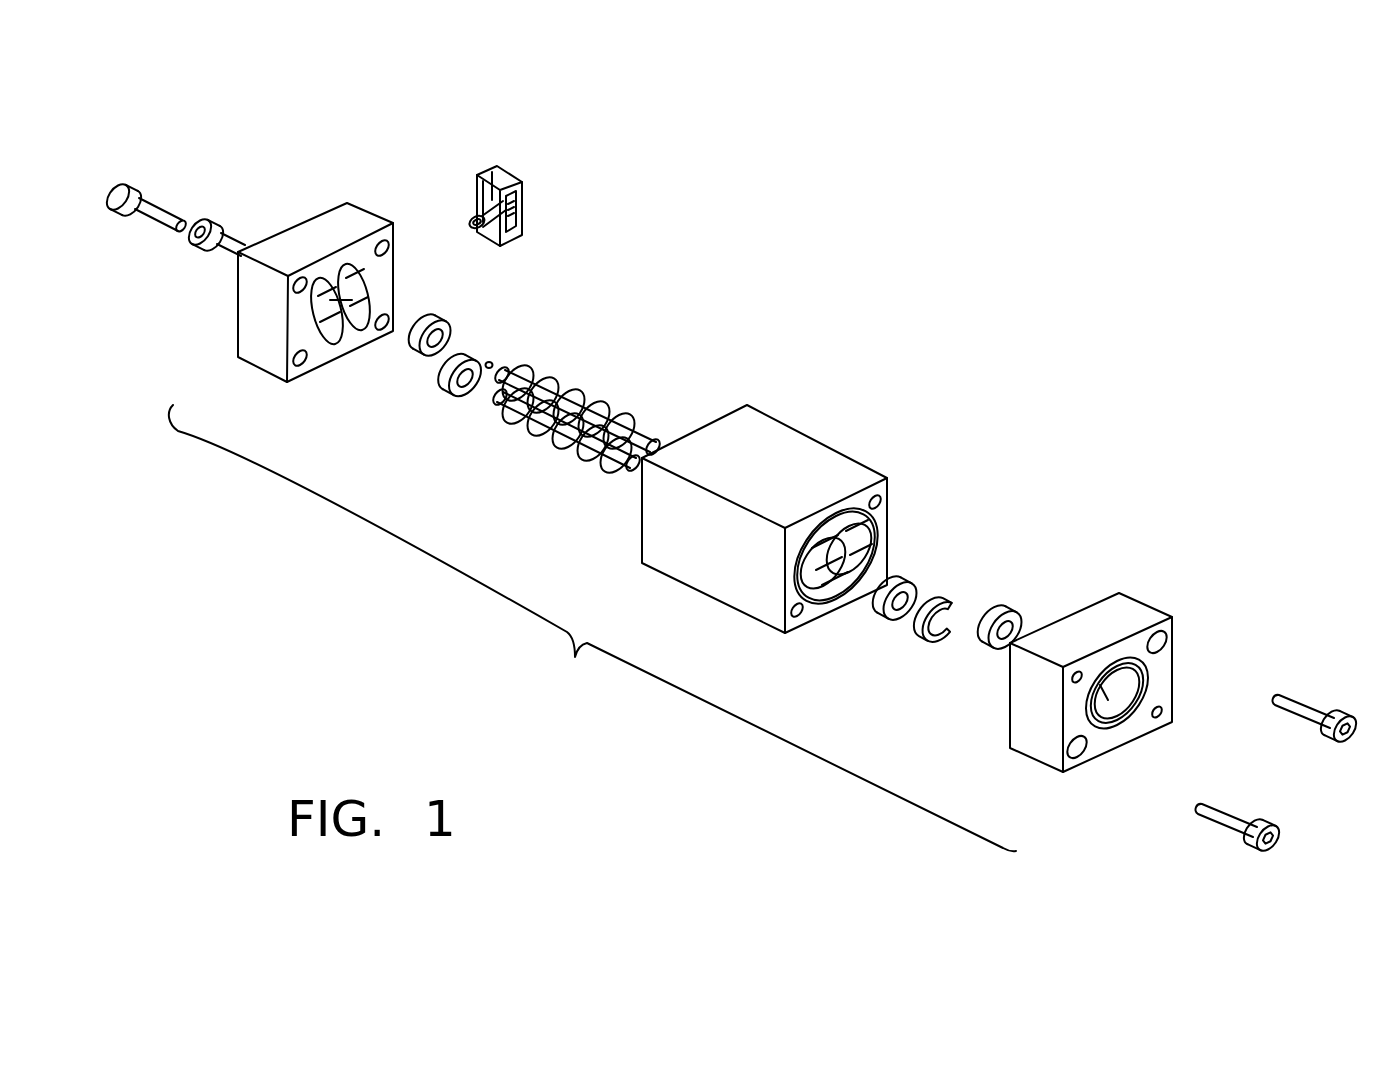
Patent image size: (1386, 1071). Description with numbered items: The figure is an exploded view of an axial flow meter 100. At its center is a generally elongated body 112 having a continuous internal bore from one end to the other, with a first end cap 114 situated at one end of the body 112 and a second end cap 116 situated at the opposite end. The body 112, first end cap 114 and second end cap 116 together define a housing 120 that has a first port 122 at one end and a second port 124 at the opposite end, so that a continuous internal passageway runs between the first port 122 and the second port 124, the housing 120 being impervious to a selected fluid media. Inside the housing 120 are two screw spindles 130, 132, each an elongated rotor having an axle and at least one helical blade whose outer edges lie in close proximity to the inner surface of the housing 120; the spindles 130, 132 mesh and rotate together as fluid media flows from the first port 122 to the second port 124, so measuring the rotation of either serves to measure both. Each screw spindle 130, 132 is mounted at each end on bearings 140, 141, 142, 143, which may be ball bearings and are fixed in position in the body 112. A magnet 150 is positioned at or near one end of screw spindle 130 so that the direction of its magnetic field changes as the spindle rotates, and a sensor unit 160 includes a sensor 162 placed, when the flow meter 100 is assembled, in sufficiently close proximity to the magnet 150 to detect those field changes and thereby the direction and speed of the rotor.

The axial flow meter 100 is at (848, 285).
The body 112 is at (787, 442).
The first end cap 114 is at (333, 220).
The second end cap 116 is at (1123, 608).
The housing 120 is at (575, 657).
The first port 122 is at (287, 229).
The second port 124 is at (1115, 703).
The screw spindle 130 is at (558, 378).
The screw spindle 132 is at (588, 405).
The bearing 140 is at (412, 348).
The bearing 141 is at (447, 392).
The bearing 142 is at (902, 572).
The bearing 143 is at (1003, 600).
The magnet 150 is at (490, 362).
The sensor unit 160 is at (487, 177).
The sensor 162 is at (487, 227).